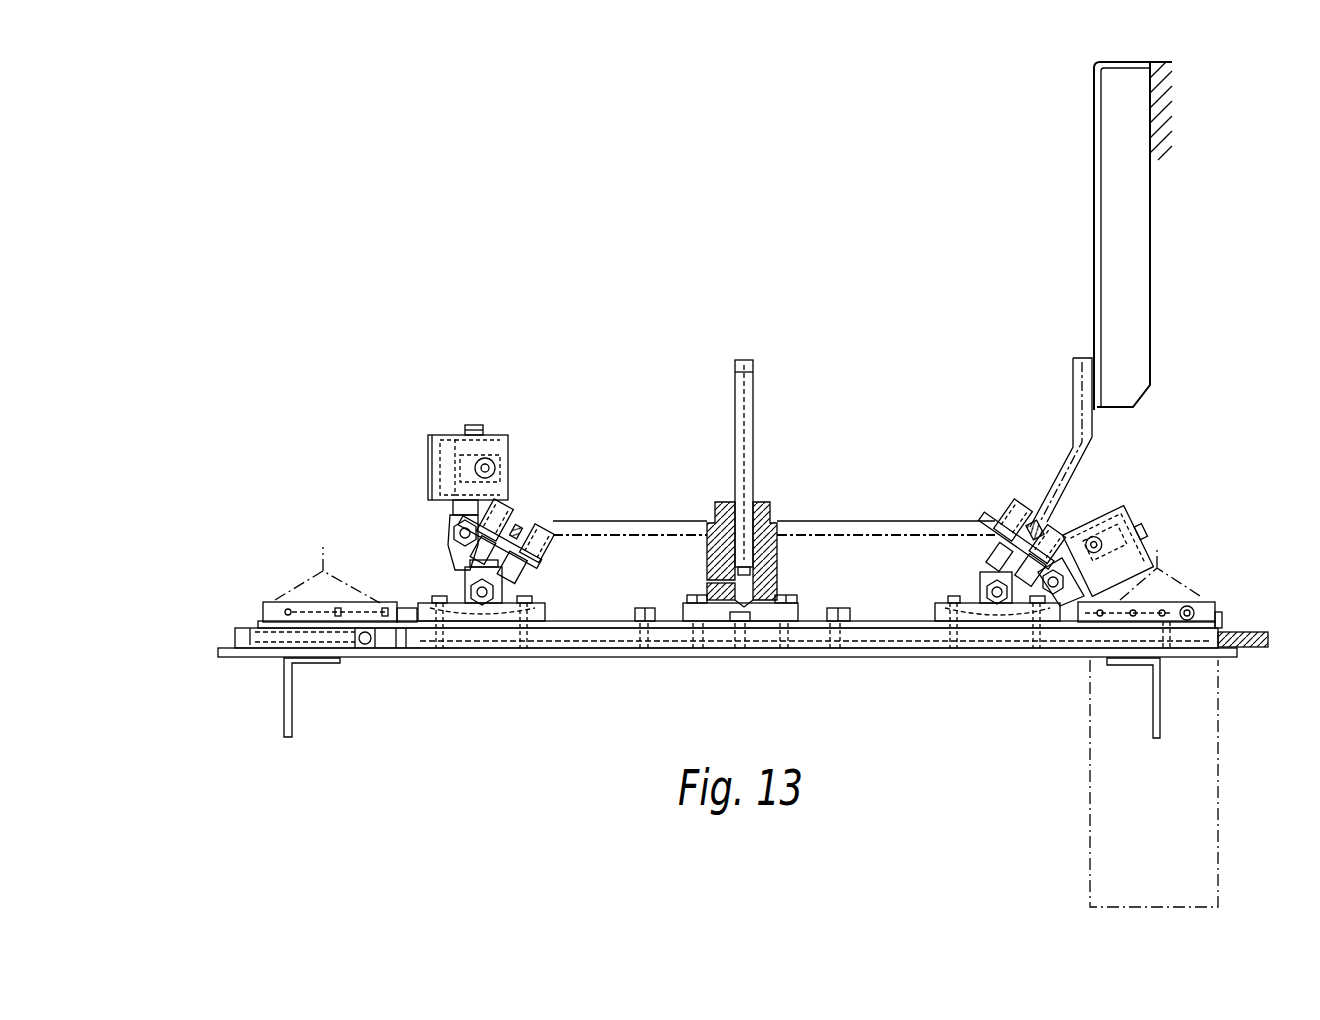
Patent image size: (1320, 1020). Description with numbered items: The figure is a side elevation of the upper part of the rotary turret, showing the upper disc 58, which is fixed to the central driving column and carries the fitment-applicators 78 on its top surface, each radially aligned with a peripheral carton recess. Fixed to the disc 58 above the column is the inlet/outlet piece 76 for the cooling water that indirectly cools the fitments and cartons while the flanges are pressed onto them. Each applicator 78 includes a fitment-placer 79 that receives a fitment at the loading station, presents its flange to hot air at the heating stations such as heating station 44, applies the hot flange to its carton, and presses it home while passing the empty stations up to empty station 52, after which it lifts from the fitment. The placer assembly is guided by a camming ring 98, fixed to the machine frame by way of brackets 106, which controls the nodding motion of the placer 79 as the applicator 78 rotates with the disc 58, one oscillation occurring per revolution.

The heating station 44 is at (376, 462).
The empty station 52 is at (1214, 518).
The upper disc 58 is at (893, 628).
The inlet/outlet piece 76 is at (770, 568).
The fitment-applicator 78 is at (455, 555).
The fitment-placer 79 is at (493, 447).
The camming ring 98 is at (872, 520).
The bracket 106 is at (1088, 374).